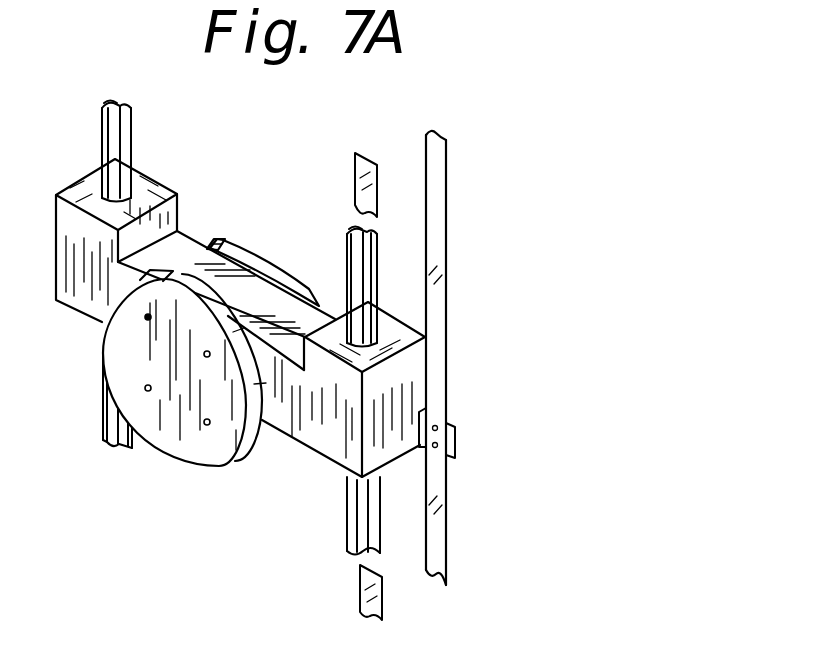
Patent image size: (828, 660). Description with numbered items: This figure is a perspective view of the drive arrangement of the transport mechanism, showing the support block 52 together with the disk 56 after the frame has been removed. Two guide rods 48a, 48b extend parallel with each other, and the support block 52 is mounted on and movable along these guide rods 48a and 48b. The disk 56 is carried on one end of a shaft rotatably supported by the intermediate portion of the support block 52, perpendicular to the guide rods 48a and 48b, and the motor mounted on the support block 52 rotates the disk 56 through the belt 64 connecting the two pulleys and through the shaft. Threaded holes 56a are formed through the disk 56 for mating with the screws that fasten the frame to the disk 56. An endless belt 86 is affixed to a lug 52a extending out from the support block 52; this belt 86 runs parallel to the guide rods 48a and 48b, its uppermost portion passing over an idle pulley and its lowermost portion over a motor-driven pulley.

The guide rod 48a is at (133, 143).
The guide rod 48b is at (354, 267).
The support block 52 is at (315, 432).
The lug 52a is at (457, 447).
The disk 56 is at (212, 447).
The threaded holes 56a is at (148, 318).
The belt 64 is at (259, 260).
The endless belt 86 is at (433, 268).